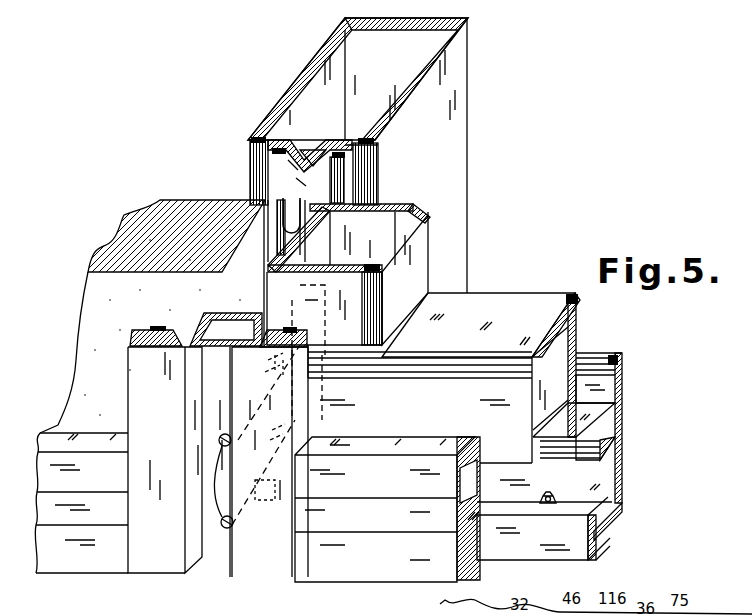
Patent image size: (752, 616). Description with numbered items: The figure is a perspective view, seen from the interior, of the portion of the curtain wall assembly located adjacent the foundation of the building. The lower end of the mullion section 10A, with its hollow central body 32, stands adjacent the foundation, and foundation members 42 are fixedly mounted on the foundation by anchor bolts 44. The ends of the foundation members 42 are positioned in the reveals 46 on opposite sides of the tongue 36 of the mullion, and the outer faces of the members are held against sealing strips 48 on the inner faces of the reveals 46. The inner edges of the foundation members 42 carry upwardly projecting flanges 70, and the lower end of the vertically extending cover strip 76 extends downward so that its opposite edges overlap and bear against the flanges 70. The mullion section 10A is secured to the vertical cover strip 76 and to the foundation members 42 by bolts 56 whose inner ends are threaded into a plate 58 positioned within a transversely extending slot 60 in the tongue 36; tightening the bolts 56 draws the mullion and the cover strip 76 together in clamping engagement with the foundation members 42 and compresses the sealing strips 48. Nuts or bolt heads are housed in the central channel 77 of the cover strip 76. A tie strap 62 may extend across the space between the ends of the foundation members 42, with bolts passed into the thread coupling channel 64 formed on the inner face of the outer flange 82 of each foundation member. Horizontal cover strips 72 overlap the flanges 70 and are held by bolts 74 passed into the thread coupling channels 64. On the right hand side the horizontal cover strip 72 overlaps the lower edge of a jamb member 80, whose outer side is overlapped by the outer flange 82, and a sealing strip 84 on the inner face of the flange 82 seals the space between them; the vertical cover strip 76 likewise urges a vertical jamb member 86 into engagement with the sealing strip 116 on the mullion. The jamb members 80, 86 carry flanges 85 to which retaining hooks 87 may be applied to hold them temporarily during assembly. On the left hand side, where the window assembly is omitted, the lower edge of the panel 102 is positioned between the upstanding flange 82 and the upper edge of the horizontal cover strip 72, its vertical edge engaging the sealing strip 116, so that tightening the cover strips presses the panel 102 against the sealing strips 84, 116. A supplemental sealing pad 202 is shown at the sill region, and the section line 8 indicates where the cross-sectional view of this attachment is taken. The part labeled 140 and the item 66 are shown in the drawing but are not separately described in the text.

The section line 8- 8 is at (577, 206).
The mullion section 10A is at (452, 161).
The hollow central body 32 is at (425, 50).
The tongue 36 is at (275, 172).
The foundation members 42 is at (600, 483).
The anchor bolts 44 is at (553, 498).
The reveals 46 is at (350, 164).
The sealing strips 48 is at (368, 188).
The bolts 56 is at (246, 405).
The plate 58 is at (318, 385).
The slot 60 is at (312, 146).
The tie strap 62 is at (260, 398).
The thread coupling channel 64 is at (576, 441).
The clip seat 66 is at (258, 427).
The flanges 70 is at (533, 546).
The horizontal cover strip 72 is at (53, 478).
The bolts 74 is at (220, 481).
The vertical cover strip 76 is at (141, 405).
The central channel 77 is at (215, 552).
The jamb member 80 is at (540, 306).
The outer flange 82 is at (624, 384).
The sealing strip 84 is at (590, 366).
The flanges 85 is at (276, 258).
The jamb member 86 is at (414, 283).
The retaining hooks 87 is at (293, 225).
The panel 102 is at (183, 212).
The sealing strip 116 is at (331, 204).
The glass panel 140 is at (455, 129).
The supplemental sealing pad 202 is at (395, 338).